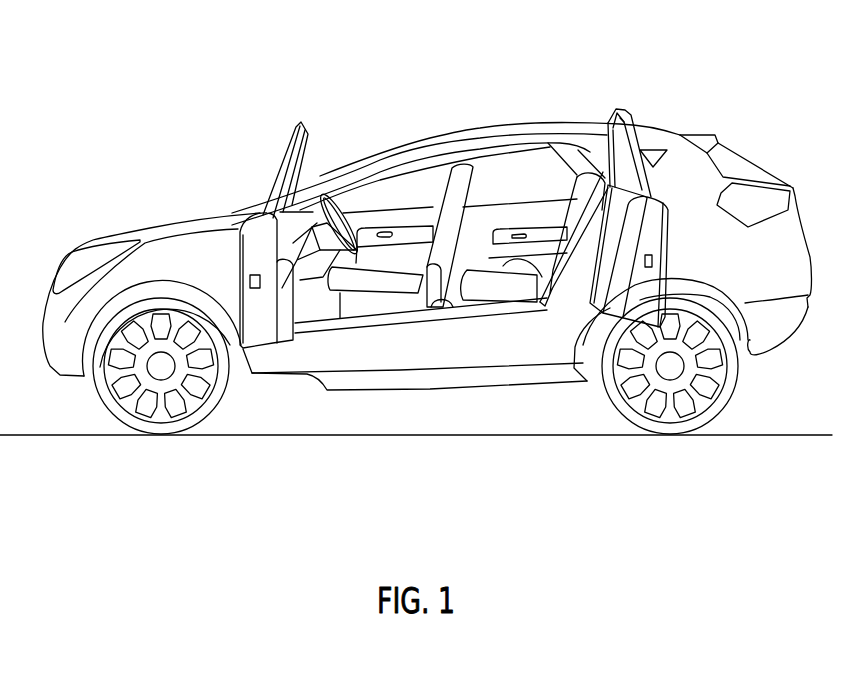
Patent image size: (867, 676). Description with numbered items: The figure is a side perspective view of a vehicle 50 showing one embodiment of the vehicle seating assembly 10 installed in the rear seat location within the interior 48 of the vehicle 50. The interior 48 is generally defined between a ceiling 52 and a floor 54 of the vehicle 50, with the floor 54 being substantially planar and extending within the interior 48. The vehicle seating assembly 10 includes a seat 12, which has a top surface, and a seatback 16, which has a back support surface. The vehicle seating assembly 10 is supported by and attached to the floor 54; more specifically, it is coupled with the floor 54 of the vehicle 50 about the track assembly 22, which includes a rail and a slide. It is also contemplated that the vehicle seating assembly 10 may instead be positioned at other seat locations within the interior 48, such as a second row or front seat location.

The vehicle seating assembly 10 is at (537, 183).
The seat 12 is at (546, 292).
The seatback 16 is at (575, 181).
The track assembly 22 is at (481, 300).
The interior 48 is at (420, 173).
The vehicle 50 is at (148, 172).
The ceiling 52 is at (466, 146).
The floor 54 is at (427, 292).